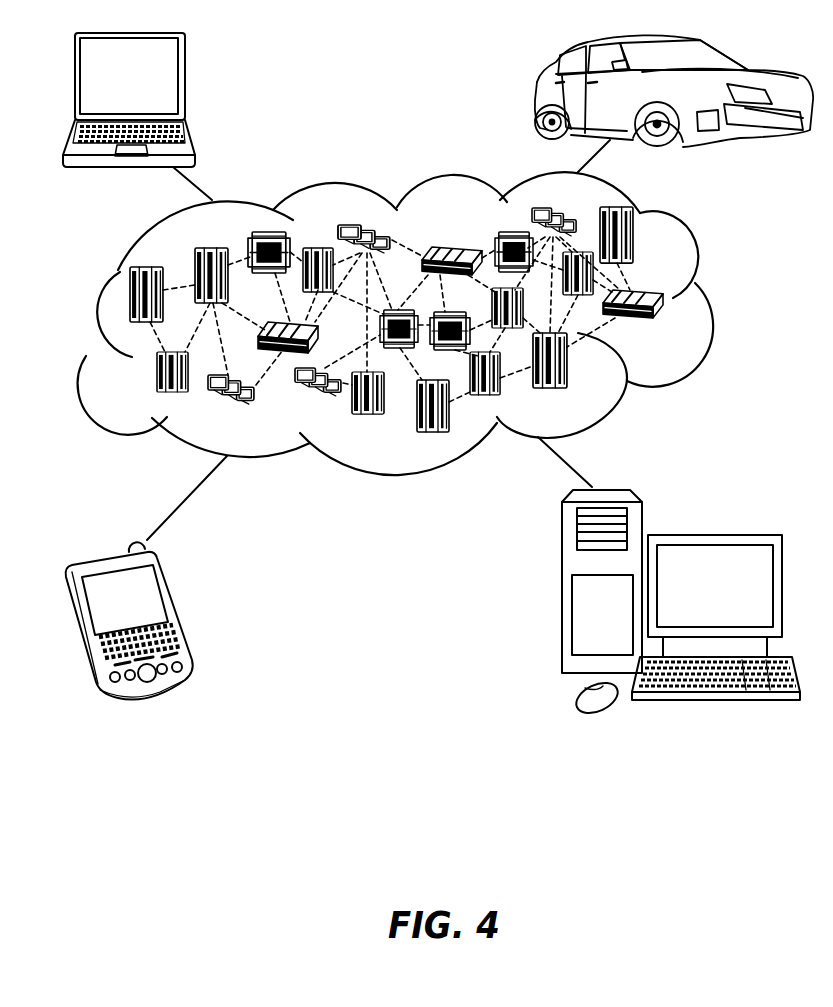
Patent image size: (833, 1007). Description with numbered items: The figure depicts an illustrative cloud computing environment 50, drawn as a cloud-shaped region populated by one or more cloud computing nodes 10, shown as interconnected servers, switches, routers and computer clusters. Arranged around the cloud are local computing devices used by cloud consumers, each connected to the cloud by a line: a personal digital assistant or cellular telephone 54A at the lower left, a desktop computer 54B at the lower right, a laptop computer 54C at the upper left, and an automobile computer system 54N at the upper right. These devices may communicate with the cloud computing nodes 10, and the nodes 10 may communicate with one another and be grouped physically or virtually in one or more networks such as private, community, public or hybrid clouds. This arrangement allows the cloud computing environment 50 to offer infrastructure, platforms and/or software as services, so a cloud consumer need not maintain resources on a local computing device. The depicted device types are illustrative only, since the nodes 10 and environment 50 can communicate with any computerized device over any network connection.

The cloud computing node 10 is at (675, 335).
The cloud computing environment 50 is at (713, 293).
The personal digital assistant or cellular telephone 54A is at (177, 607).
The desktop computer 54B is at (712, 535).
The laptop computer 54C is at (185, 83).
The automobile computer system 54N is at (535, 96).